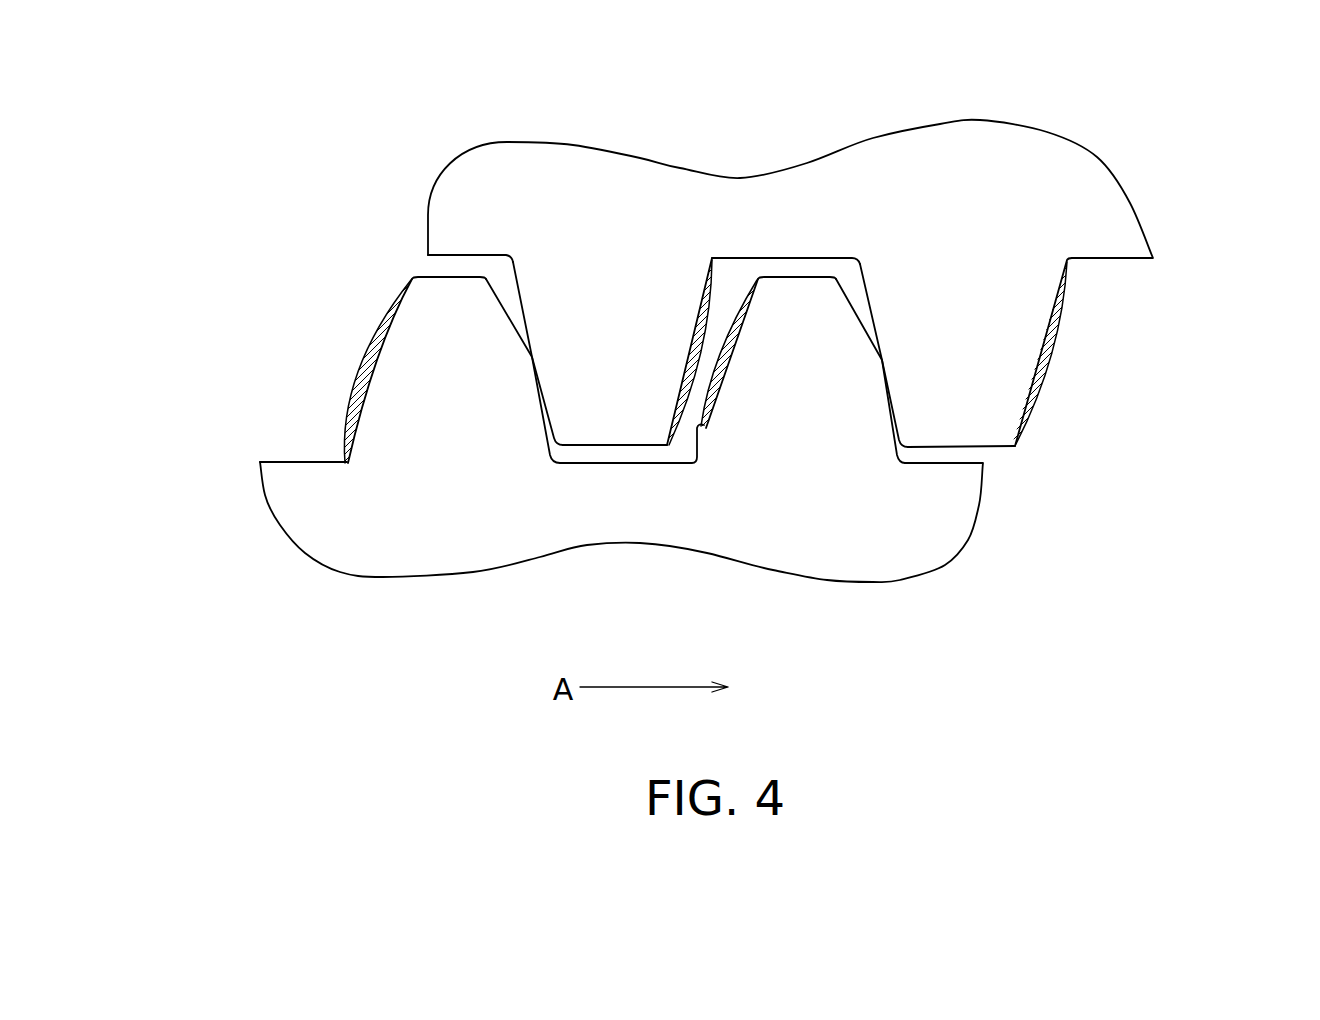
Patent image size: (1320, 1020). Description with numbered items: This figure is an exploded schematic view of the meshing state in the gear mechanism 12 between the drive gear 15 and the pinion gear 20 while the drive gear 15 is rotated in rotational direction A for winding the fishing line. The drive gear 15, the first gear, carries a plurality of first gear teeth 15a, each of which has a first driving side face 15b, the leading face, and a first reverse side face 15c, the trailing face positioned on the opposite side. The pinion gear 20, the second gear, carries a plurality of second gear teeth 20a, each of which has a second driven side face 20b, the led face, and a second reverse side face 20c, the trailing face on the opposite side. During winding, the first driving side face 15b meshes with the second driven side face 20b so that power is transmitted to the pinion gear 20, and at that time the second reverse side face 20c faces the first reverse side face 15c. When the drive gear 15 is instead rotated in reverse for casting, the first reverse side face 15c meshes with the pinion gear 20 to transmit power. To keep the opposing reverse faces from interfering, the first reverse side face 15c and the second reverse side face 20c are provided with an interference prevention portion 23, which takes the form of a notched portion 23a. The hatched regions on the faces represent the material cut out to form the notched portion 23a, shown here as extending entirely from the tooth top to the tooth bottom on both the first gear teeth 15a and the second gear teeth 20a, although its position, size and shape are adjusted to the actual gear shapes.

The gear mechanism 12 is at (285, 232).
The drive gear 15 is at (295, 560).
The first gear teeth 15a is at (457, 273).
The first driving side face 15b is at (518, 322).
The first reverse side face 15c is at (400, 300).
The pinion gear 20 is at (1105, 158).
The second gear teeth 20a is at (573, 447).
The second driven side face 20b is at (537, 377).
The second reverse side face 20c is at (1050, 353).
The interference prevention portion 23 is at (370, 357).
The notched portion 23a is at (347, 430).